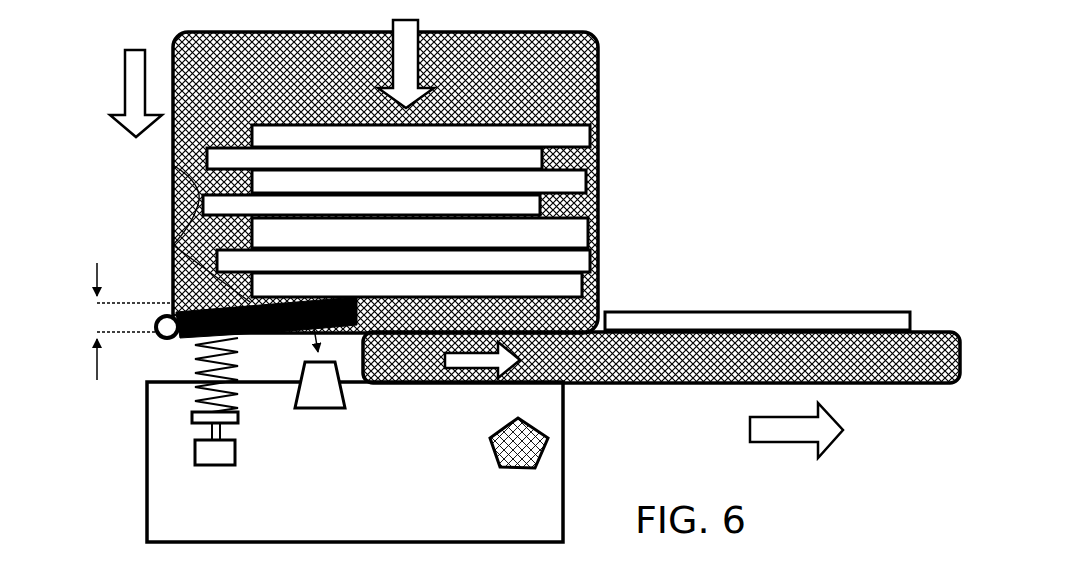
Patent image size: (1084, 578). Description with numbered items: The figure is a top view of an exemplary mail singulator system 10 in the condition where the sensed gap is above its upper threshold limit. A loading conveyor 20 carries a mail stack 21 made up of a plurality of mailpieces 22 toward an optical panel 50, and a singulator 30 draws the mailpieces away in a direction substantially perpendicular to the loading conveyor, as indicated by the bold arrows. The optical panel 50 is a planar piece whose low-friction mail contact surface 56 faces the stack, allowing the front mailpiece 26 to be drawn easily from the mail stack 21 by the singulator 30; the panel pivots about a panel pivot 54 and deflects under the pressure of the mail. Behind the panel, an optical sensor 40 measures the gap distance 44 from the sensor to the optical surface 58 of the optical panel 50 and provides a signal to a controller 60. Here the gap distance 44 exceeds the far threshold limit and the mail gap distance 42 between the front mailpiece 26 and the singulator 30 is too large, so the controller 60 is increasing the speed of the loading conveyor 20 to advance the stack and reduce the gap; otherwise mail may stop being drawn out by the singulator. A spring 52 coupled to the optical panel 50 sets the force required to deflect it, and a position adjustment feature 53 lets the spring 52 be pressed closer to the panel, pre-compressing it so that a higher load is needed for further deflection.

The mail singulator system 10 is at (728, 188).
The loading conveyor 20 is at (550, 96).
The mail stack 21 is at (550, 236).
The mailpieces 22 is at (542, 140).
The front mailpiece 26 is at (570, 284).
The singulator 30 is at (678, 358).
The optical sensor 40 is at (320, 398).
The mail gap distance 42 is at (97, 382).
The gap distance 44 is at (322, 347).
The optical panel 50 is at (162, 316).
The spring 52 is at (197, 367).
The position adjustment feature 53 is at (198, 452).
The panel pivot 54 is at (165, 303).
The mail contact surface 56 is at (173, 245).
The optical surface 58 is at (305, 335).
The controller 60 is at (508, 450).